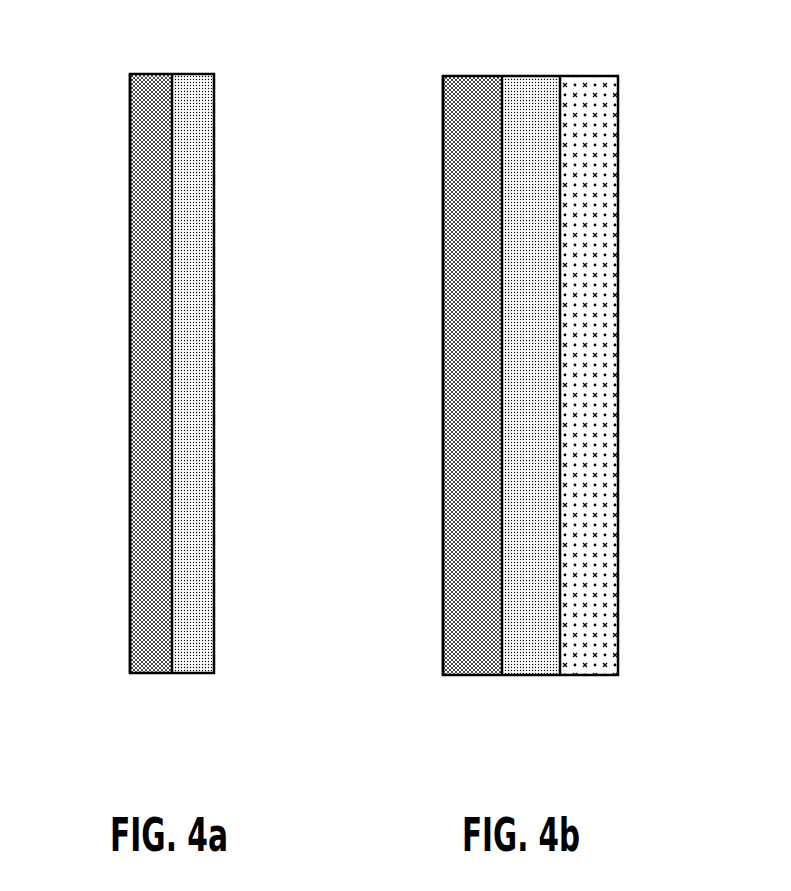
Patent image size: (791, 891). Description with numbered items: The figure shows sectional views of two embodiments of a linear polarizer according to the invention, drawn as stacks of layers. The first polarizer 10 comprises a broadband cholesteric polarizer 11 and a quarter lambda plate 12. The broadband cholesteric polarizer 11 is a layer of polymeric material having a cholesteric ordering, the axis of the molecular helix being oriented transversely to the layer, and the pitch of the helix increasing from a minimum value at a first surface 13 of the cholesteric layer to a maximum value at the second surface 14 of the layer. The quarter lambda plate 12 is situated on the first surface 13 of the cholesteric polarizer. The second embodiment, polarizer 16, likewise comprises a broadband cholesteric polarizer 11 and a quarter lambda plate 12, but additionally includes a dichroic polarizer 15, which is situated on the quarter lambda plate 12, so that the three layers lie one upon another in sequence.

In FIG. 4A, the polarizer 10 is at (116, 405).
In FIG. 4A, the broadband cholesteric polarizer 11 is at (158, 95).
In FIG. 4B, the broadband cholesteric polarizer 11 is at (472, 95).
In FIG. 4A, the quarter lambda plate 12 is at (200, 95).
In FIG. 4B, the quarter lambda plate 12 is at (533, 102).
In FIG. 4A, the first surface 13 is at (170, 640).
In FIG. 4B, the first surface 13 is at (500, 655).
In FIG. 4A, the second surface 14 is at (131, 634).
In FIG. 4B, the second surface 14 is at (443, 650).
In FIG. 4B, the dichroic polarizer 15 is at (608, 607).
In FIG. 4B, the polarizer 16 is at (430, 364).